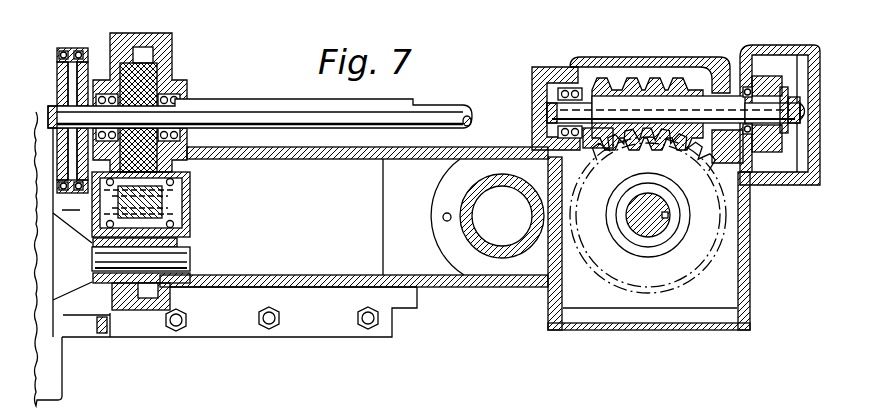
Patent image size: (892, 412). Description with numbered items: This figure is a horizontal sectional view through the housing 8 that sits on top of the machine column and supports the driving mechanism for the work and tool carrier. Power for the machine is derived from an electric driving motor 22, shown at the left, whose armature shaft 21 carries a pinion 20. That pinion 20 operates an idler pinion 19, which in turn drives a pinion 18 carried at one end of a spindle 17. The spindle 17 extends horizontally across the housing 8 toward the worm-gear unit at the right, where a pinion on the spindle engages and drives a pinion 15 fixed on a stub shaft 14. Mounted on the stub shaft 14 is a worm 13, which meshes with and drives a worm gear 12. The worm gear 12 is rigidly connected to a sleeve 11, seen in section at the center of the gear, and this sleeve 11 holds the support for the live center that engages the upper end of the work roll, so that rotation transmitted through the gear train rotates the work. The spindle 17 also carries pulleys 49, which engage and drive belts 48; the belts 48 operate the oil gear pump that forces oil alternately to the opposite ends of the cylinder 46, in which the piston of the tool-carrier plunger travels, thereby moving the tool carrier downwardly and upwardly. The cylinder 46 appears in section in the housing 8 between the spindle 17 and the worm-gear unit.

The housing 8 is at (473, 289).
The sleeve 11 is at (657, 238).
The worm gear 12 is at (690, 153).
The worm 13 is at (627, 82).
The stub shaft 14 is at (722, 103).
The pinion 15 is at (768, 80).
The spindle 17 is at (445, 104).
The pinion 18 is at (143, 78).
The idler pinion 19 is at (178, 190).
The pinion 20 is at (180, 243).
The armature shaft 21 is at (172, 257).
The electric driving motor 22 is at (63, 340).
The cylinder 46 is at (477, 204).
The belts 48 is at (78, 50).
The pulleys 49 is at (67, 88).